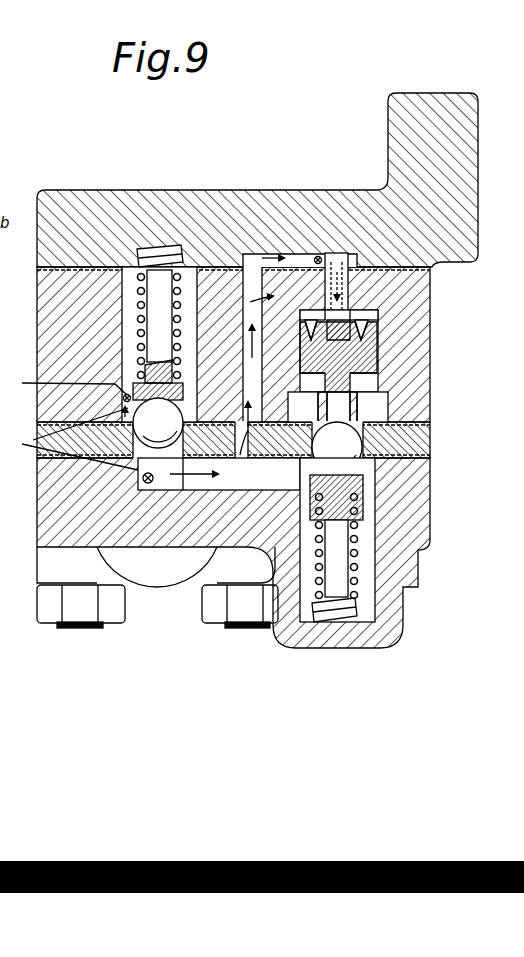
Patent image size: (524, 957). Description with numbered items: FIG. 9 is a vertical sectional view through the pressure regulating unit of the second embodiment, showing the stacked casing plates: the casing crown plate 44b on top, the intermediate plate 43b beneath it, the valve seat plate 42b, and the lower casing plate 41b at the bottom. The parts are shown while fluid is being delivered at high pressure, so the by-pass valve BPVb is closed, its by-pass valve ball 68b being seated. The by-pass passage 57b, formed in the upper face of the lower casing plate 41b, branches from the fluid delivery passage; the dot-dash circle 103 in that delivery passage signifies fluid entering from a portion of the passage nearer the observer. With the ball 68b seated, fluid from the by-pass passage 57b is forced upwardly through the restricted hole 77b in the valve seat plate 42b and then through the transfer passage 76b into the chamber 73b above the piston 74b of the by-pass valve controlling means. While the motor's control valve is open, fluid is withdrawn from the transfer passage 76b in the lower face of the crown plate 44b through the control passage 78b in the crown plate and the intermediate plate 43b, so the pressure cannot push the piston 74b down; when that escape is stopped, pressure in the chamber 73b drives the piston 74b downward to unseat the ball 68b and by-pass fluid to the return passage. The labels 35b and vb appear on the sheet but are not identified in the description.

The casing crown plate 44b is at (440, 261).
The intermediate plate 43b is at (422, 392).
The valve seat plate 42b is at (425, 432).
The lower casing plate 41b is at (418, 503).
The control passage 78b is at (326, 253).
The transfer passage 76b is at (326, 293).
The restricted hole 77b is at (229, 421).
The chamber 73b is at (372, 318).
The piston 74b is at (376, 362).
The by-pass valve BPVb is at (365, 446).
The by-pass valve ball 68b is at (302, 459).
The by-pass passage 57b is at (240, 483).
The dot-dash arrow-signifying circle 103 is at (145, 485).
The passage 35b is at (69, 439).
The valve vb is at (63, 385).